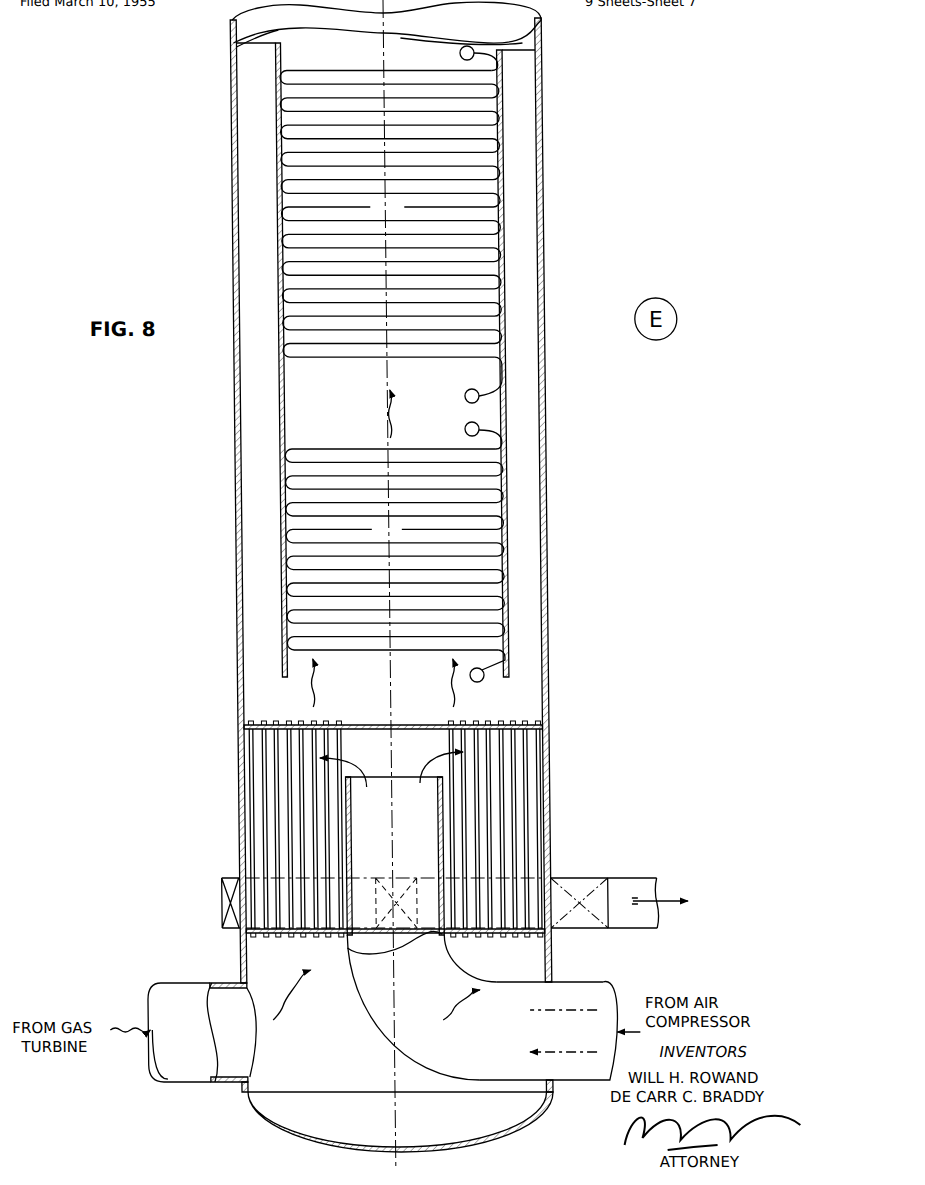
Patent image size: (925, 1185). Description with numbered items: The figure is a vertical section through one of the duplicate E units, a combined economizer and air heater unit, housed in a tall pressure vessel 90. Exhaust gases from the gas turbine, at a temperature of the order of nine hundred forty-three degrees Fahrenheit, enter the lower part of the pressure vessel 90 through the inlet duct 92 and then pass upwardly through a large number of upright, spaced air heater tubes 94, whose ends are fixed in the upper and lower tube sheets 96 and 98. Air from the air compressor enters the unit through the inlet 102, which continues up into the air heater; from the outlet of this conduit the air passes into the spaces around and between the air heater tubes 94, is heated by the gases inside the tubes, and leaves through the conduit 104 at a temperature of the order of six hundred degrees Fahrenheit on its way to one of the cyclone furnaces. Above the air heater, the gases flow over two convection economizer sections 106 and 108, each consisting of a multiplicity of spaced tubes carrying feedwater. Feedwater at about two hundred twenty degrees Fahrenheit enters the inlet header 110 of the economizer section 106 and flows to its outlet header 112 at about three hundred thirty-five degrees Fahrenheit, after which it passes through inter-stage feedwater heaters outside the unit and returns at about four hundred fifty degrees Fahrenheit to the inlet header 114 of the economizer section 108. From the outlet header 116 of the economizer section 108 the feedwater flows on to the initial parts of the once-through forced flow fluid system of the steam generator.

The pressure vessel 90 is at (542, 430).
The inlet duct 92 is at (179, 995).
The air heater tubes 94 is at (255, 762).
The upper tube sheet 96 is at (512, 721).
The lower tube sheet 98 is at (470, 937).
The air inlet 102 is at (559, 985).
The air outlet conduit 104 is at (555, 880).
The first economizer section 106 is at (391, 214).
The second economizer section 108 is at (395, 549).
The inlet header 110 is at (459, 53).
The outlet header 112 is at (461, 393).
The inlet header 114 is at (460, 430).
The outlet header 116 is at (474, 680).